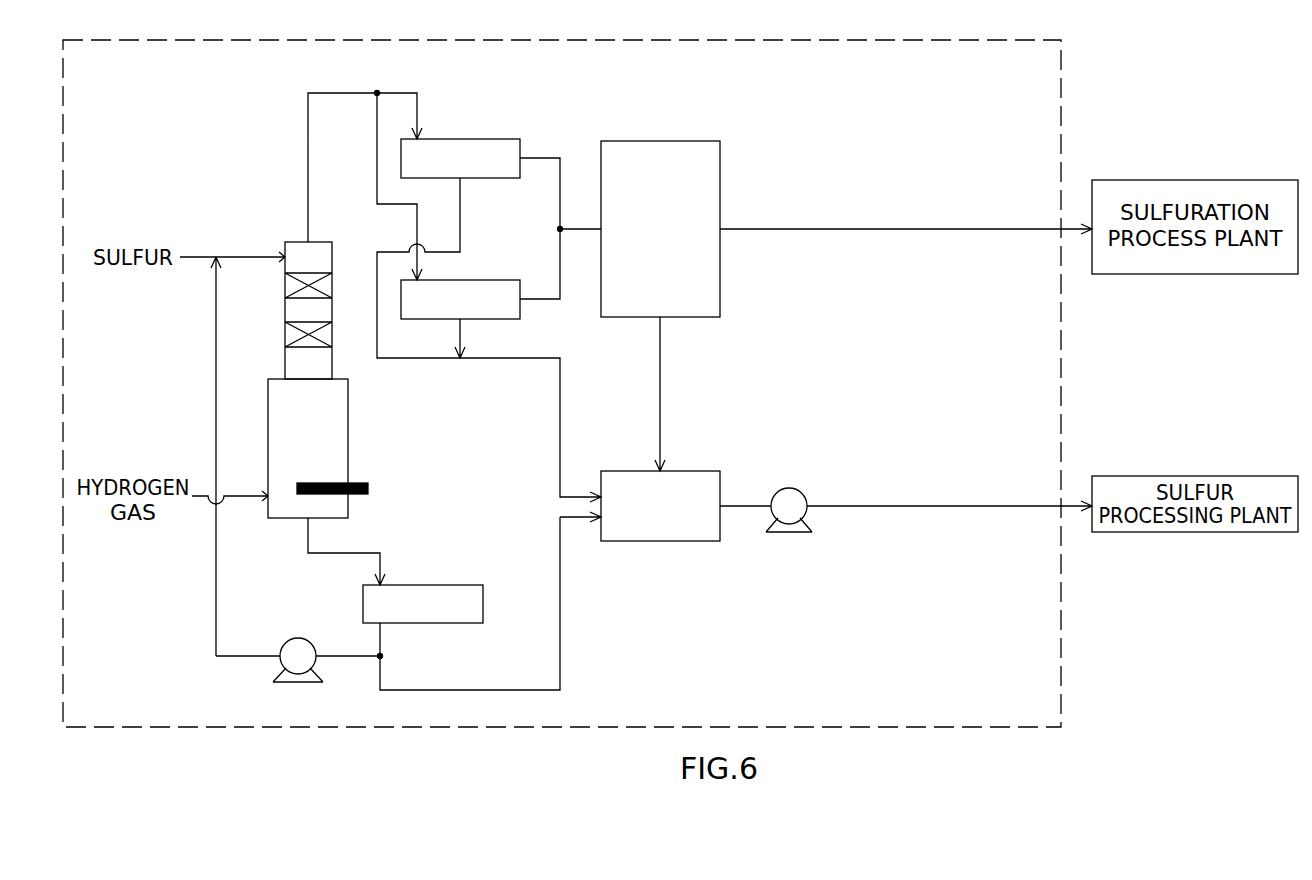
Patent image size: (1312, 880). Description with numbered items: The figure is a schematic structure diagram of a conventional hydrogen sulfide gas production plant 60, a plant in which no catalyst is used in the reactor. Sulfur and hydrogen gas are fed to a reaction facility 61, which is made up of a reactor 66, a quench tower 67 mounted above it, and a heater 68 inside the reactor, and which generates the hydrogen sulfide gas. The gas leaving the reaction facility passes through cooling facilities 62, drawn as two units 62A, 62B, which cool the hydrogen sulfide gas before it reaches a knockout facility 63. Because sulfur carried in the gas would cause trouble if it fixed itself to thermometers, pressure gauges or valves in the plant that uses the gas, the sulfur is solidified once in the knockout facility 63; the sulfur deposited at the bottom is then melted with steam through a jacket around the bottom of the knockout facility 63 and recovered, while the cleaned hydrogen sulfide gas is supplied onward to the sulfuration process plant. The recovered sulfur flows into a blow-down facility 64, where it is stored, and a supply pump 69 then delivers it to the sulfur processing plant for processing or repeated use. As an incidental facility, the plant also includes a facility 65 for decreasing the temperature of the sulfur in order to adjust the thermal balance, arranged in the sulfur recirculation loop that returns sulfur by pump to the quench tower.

The hydrogen sulfide gas production plant 60 is at (1008, 68).
The reaction facility 61 is at (331, 380).
The cooling facilities 62 is at (464, 186).
The cooling facility 62A is at (498, 139).
The cooling facility 62B is at (498, 280).
The knockout facility 63 is at (660, 141).
The blow-down facility 64 is at (693, 471).
The facility for decreasing the temperature of the sulfur 65 is at (448, 585).
The reactor 66 is at (348, 439).
The quench tower 67 is at (285, 309).
The heater 68 is at (368, 488).
The supply pump 69 is at (789, 488).